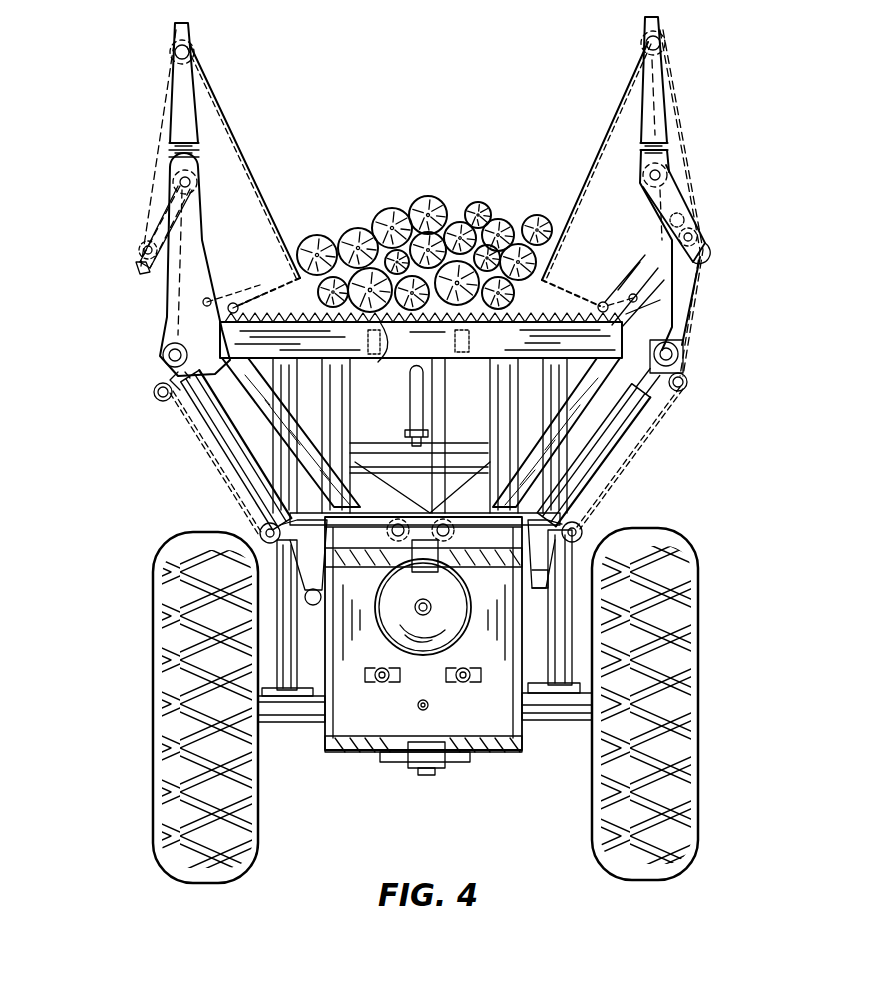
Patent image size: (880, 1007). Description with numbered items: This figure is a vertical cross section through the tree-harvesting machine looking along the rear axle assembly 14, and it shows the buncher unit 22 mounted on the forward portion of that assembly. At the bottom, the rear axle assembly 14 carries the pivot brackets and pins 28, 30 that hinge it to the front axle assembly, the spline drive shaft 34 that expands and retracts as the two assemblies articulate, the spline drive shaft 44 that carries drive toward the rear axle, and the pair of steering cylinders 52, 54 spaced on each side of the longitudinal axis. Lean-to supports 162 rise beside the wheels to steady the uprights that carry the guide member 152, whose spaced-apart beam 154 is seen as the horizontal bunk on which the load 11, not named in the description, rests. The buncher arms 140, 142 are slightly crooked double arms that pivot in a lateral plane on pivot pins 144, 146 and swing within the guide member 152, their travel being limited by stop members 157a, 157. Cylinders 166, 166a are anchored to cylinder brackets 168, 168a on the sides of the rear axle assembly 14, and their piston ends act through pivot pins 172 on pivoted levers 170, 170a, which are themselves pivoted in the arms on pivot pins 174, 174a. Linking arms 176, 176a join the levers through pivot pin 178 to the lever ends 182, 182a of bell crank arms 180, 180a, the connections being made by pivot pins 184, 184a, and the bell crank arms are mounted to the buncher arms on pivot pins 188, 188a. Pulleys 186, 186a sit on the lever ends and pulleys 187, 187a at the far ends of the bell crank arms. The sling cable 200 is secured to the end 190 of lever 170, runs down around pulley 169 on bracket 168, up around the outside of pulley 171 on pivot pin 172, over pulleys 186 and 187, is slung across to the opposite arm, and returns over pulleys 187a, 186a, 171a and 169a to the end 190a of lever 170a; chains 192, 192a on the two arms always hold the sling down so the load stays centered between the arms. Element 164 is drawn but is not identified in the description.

The logs 11 is at (425, 287).
The rear axle assembly 14 is at (548, 732).
The buncher unit 22 is at (162, 413).
The pivot bracket and pin 28 is at (410, 500).
The pivot bracket and pin 30 is at (432, 768).
The spline drive shaft 34 is at (432, 612).
The spline drive shaft 44 is at (422, 687).
The steering cylinder 52 is at (375, 686).
The steering cylinder 54 is at (468, 686).
The buncher arm 140 is at (291, 435).
The buncher arm 142 is at (555, 435).
The pivot pin 144 is at (388, 533).
The pivot pin 146 is at (455, 533).
The guide member 152 is at (456, 364).
The beam 154 is at (421, 335).
The stop member 157 is at (624, 300).
The stop member 157a is at (232, 291).
The lean-to support 162 is at (278, 628).
The bunk bracket 164 is at (383, 359).
The cylinder 166 is at (612, 458).
The cylinder 166a is at (238, 445).
The cylinder bracket 168 is at (540, 572).
The cylinder bracket 168a is at (322, 598).
The pulley 169 is at (584, 532).
The pulley 169a is at (260, 532).
The pivoted lever 170 is at (690, 320).
The pivoted lever 170a is at (165, 346).
The pulley 171 is at (681, 343).
The pulley 171a is at (163, 358).
The pivot pin 172 is at (684, 360).
The pivot pin 174 is at (631, 280).
The pivot pin 174a is at (238, 278).
The linking arm 176 is at (708, 258).
The linking arm 176a is at (143, 272).
The pivot pin 178 is at (705, 285).
The bell crank arm 180 is at (672, 85).
The bell crank arm 180a is at (182, 90).
The lever end 182 is at (680, 195).
The lever end 182a is at (163, 214).
The pivot pin 184 is at (690, 222).
The pivot pin 184a is at (184, 150).
The pulley 186 is at (700, 236).
The pulley 186a is at (144, 248).
The pulley 187 is at (662, 40).
The pulley 187a is at (175, 50).
The pivot pin 188 is at (660, 175).
The pivot pin 188a is at (185, 182).
The lever end 190 is at (688, 383).
The lever end 190a is at (163, 392).
The chain 192 is at (567, 297).
The chain 192a is at (269, 295).
The sling cable 200 is at (268, 192).